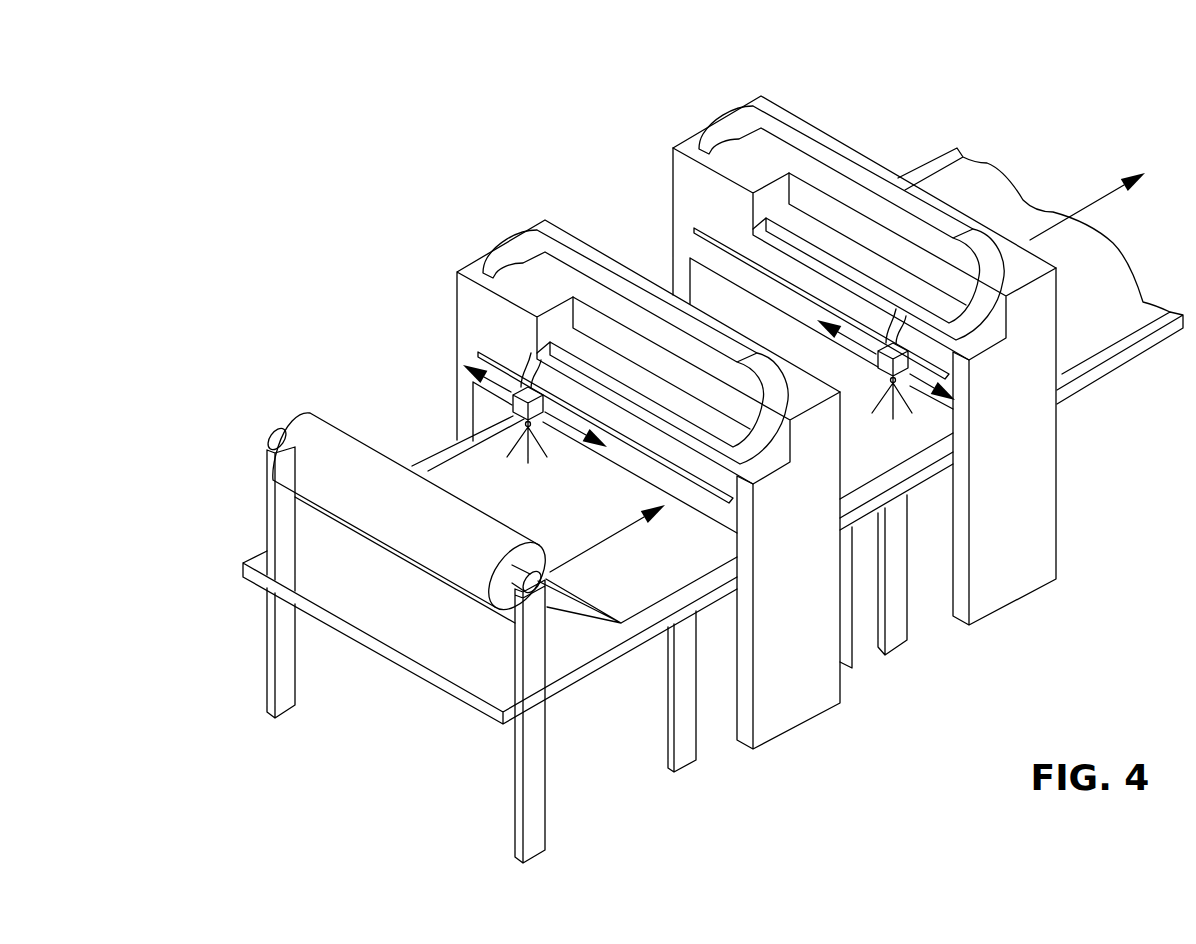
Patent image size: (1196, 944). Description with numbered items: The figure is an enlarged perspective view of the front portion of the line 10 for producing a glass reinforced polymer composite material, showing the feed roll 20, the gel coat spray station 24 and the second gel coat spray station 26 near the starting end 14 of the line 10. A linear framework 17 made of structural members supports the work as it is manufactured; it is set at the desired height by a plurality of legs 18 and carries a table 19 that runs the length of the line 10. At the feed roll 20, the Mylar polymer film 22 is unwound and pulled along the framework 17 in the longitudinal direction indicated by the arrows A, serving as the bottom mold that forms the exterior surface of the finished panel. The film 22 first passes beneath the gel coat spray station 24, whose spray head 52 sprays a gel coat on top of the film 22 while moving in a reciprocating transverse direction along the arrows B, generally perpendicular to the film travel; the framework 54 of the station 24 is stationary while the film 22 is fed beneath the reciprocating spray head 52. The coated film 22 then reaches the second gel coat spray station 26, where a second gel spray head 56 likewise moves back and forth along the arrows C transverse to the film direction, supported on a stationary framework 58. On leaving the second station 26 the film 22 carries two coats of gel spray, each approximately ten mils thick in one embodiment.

The line 10 is at (893, 80).
The starting end 14 is at (231, 403).
The linear framework 17 is at (1133, 407).
The legs 18 is at (683, 753).
The table 19 is at (415, 634).
The feed roll 20 is at (294, 366).
The polymer film 22 is at (470, 476).
The gel coat spray station 24 is at (628, 473).
The second gel coat spray station 26 is at (833, 371).
The spray head 52 is at (517, 385).
The framework 54 is at (793, 700).
The second gel spray head 56 is at (915, 358).
The framework 58 is at (1013, 583).